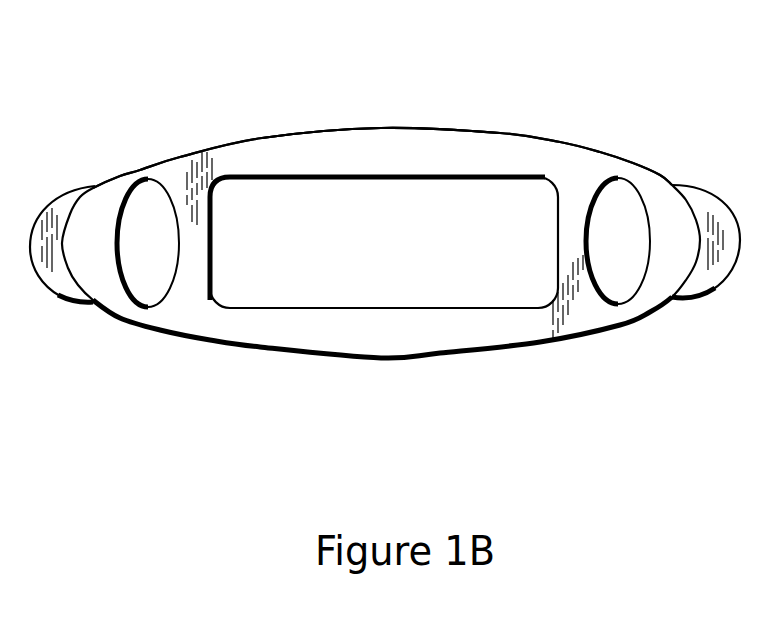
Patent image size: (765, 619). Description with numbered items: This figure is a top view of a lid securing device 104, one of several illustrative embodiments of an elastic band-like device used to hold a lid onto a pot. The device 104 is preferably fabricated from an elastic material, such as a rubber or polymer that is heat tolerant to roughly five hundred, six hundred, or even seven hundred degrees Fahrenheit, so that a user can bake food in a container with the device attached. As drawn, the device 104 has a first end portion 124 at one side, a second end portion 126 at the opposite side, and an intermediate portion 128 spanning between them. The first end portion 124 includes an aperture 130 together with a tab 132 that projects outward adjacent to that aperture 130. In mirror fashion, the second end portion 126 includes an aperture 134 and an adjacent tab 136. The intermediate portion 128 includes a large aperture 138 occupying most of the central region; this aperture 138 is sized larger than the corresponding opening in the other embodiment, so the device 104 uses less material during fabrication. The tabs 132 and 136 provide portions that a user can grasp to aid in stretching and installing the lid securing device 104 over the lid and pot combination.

The lid securing device 104 is at (540, 58).
The first end portion 124 is at (138, 160).
The second end portion 126 is at (633, 162).
The intermediate portion 128 is at (378, 128).
The aperture 130 is at (141, 288).
The tab 132 is at (47, 277).
The aperture 134 is at (618, 290).
The tab 136 is at (705, 298).
The aperture 138 is at (352, 190).